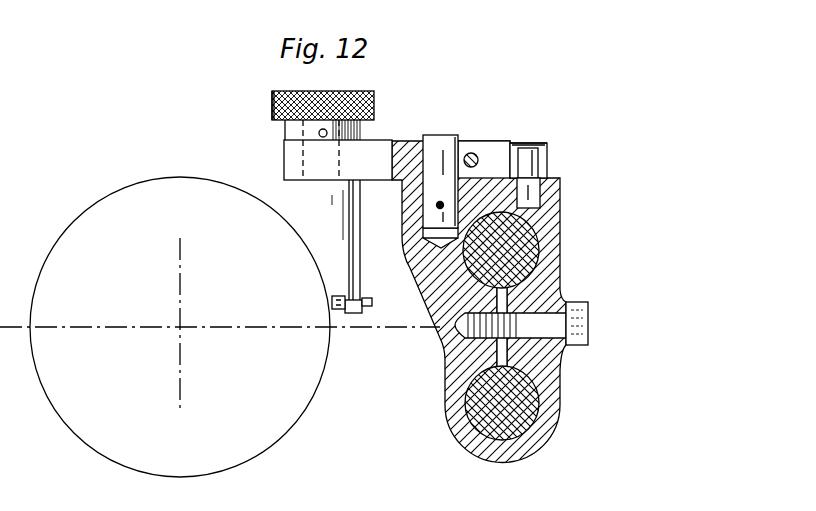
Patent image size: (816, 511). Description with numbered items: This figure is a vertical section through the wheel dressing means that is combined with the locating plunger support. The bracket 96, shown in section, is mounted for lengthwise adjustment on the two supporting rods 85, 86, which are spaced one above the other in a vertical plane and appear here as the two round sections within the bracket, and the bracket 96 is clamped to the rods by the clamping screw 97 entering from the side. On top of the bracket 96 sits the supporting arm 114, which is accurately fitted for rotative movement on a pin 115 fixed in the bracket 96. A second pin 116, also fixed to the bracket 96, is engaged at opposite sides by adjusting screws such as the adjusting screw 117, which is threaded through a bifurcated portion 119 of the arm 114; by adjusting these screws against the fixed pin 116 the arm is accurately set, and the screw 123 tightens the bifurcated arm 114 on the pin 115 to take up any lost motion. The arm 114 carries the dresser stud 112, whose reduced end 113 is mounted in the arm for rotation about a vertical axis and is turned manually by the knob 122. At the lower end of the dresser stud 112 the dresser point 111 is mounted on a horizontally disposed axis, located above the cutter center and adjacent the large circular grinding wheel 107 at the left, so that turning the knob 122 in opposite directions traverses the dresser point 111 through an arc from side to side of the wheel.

The wheel 107 is at (73, 222).
The dresser point 111 is at (332, 299).
The dresser stud 112 is at (338, 217).
The reduced end 113 is at (311, 91).
The supporting arm 114 is at (385, 148).
The pin 115 is at (446, 141).
The pin 116 is at (538, 136).
The adjusting screw 117 is at (548, 165).
The bifurcated portion 119 is at (545, 146).
The knob 122 is at (272, 101).
The screw 123 is at (474, 158).
The bracket 96 is at (553, 227).
The supporting rod 85 is at (522, 248).
The supporting rod 86 is at (537, 402).
The clamping screw 97 is at (578, 328).